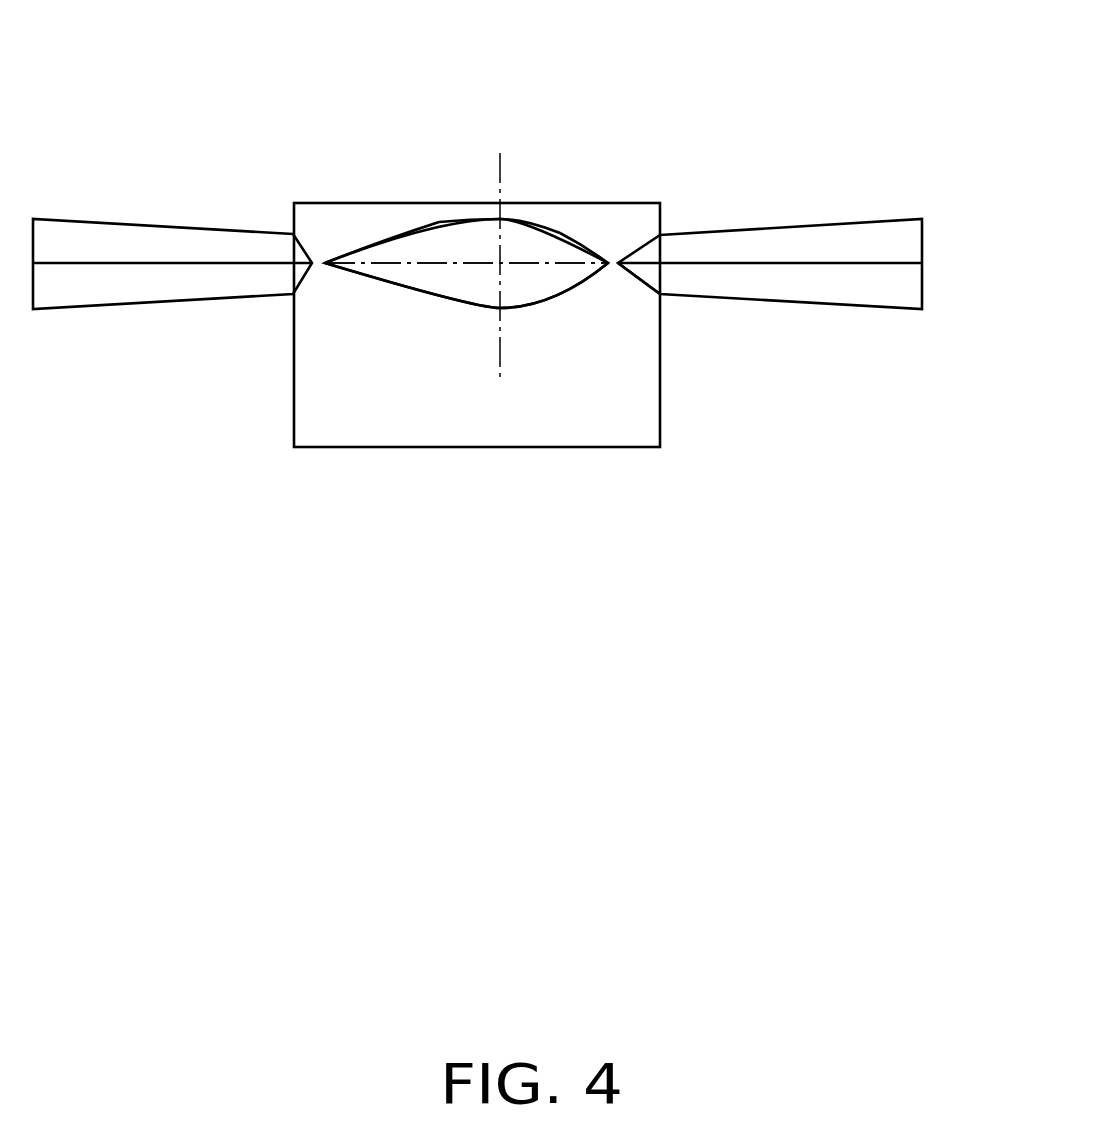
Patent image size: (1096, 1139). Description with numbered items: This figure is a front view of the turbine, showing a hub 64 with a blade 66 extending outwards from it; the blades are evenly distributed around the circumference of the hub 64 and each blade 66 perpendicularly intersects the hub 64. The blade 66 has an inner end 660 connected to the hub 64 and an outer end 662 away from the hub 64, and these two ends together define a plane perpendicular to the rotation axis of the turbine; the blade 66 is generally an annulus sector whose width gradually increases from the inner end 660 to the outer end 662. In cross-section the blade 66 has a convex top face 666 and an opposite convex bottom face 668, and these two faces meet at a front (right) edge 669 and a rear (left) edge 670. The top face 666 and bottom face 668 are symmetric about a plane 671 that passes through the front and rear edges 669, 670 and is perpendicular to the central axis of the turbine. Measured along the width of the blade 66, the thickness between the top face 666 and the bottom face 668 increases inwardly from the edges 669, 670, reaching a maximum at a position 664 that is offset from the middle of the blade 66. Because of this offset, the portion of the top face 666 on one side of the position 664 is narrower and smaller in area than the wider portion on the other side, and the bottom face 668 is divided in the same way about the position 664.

The hub 64 is at (450, 403).
The blade 66 is at (820, 283).
The inner end 660 is at (657, 290).
The outer end 662 is at (445, 252).
The position with the maximum thickness 664 is at (500, 218).
The top face 666 is at (412, 228).
The bottom face 668 is at (543, 307).
The front edge 669 is at (608, 257).
The rear edge 670 is at (325, 263).
The plane 671 is at (538, 263).